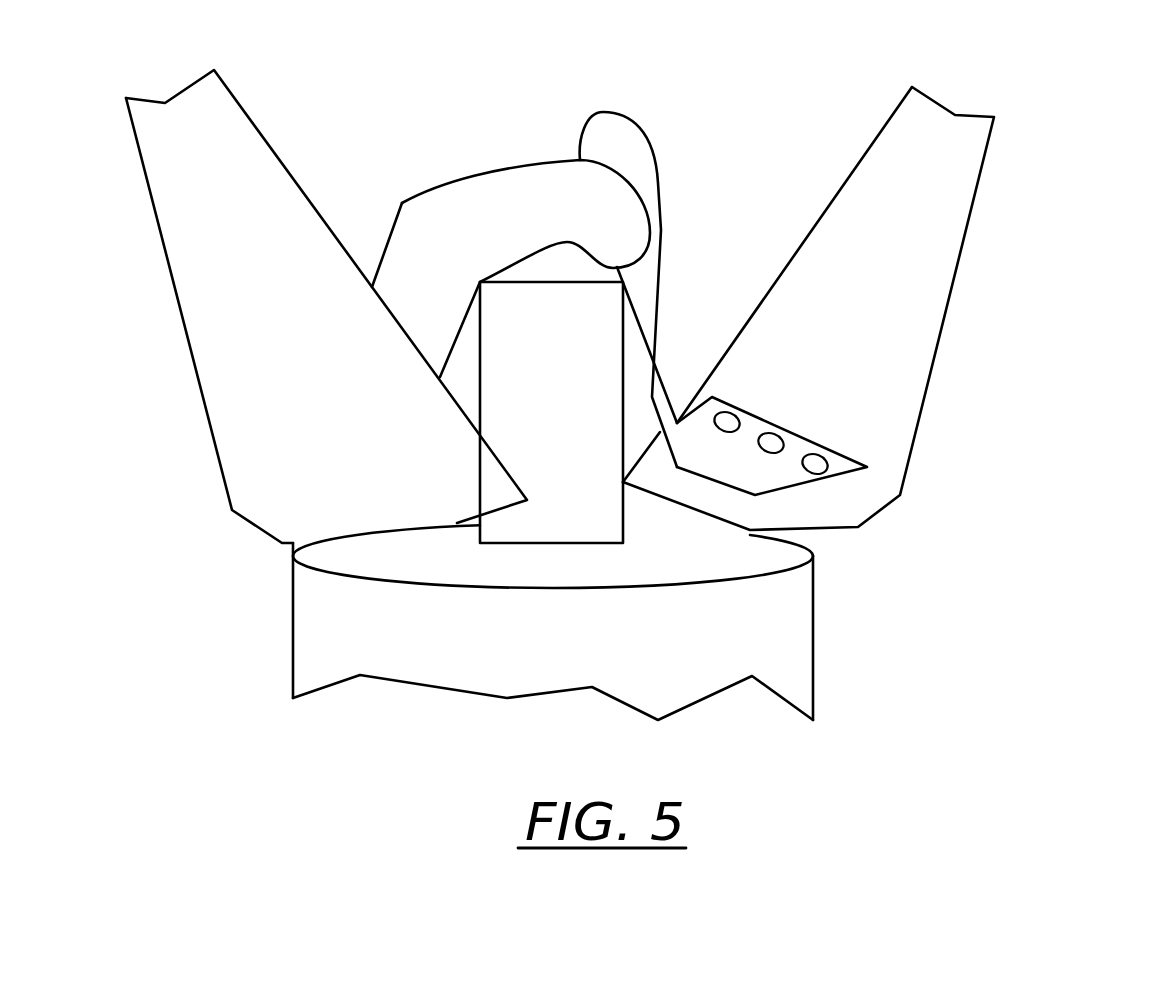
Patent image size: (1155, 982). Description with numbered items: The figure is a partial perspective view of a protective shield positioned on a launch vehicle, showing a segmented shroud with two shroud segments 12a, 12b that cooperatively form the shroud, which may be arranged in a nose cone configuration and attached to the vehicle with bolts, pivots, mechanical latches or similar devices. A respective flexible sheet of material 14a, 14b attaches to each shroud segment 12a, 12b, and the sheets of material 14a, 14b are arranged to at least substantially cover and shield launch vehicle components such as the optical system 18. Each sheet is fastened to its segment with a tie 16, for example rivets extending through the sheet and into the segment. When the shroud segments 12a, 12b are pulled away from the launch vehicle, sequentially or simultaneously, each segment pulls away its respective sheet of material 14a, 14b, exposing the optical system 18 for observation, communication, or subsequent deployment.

The shroud segment 12a is at (275, 203).
The shroud segment 12b is at (927, 248).
The flexible sheet of material 14a is at (508, 203).
The flexible sheet of material 14b is at (617, 150).
The tie 16 is at (850, 463).
The optical system 18 is at (595, 355).